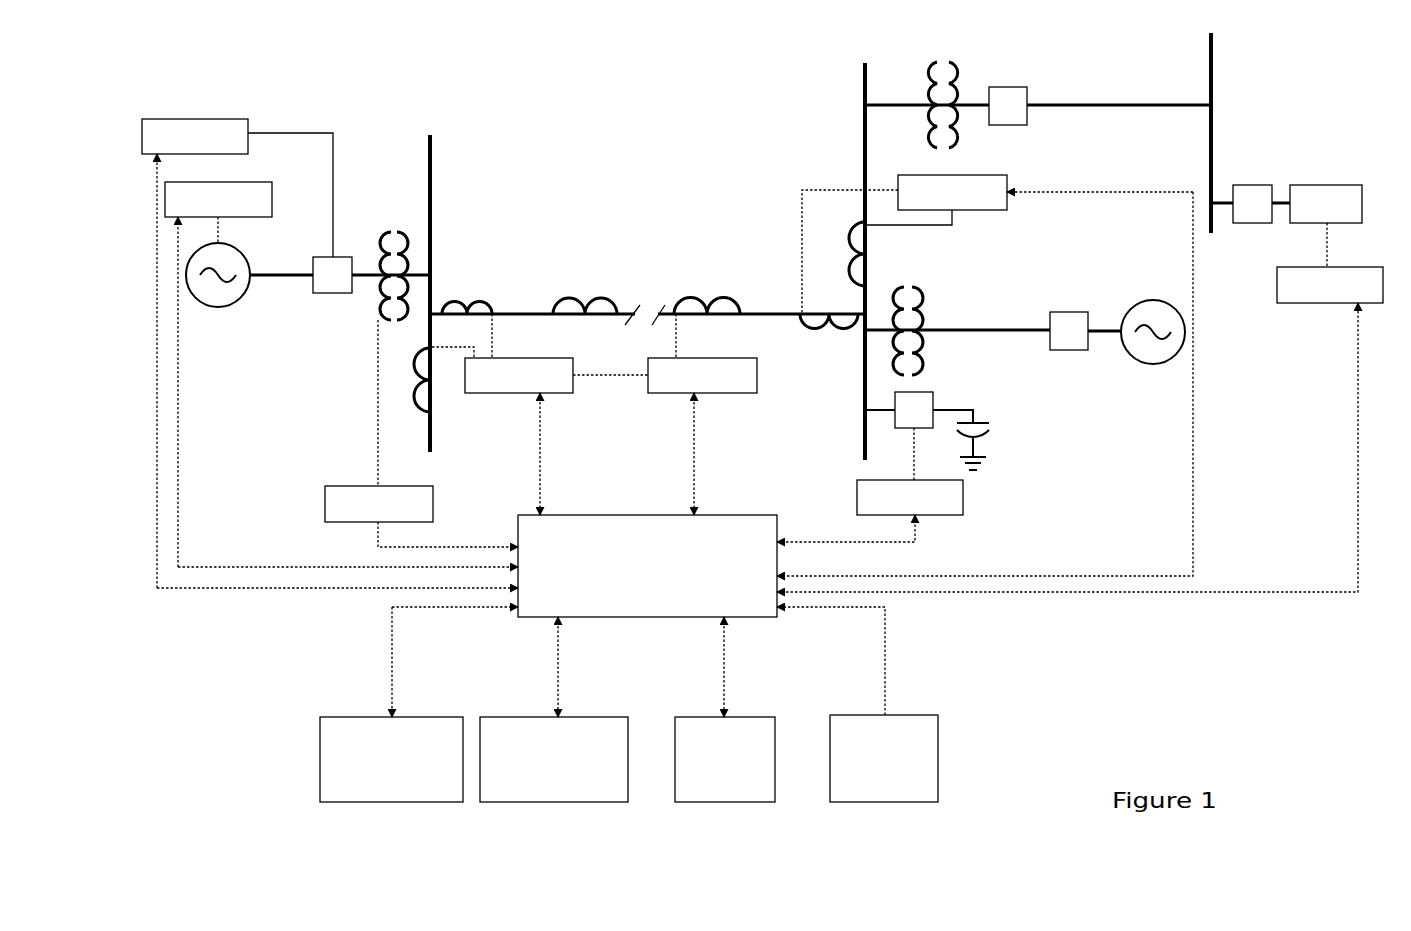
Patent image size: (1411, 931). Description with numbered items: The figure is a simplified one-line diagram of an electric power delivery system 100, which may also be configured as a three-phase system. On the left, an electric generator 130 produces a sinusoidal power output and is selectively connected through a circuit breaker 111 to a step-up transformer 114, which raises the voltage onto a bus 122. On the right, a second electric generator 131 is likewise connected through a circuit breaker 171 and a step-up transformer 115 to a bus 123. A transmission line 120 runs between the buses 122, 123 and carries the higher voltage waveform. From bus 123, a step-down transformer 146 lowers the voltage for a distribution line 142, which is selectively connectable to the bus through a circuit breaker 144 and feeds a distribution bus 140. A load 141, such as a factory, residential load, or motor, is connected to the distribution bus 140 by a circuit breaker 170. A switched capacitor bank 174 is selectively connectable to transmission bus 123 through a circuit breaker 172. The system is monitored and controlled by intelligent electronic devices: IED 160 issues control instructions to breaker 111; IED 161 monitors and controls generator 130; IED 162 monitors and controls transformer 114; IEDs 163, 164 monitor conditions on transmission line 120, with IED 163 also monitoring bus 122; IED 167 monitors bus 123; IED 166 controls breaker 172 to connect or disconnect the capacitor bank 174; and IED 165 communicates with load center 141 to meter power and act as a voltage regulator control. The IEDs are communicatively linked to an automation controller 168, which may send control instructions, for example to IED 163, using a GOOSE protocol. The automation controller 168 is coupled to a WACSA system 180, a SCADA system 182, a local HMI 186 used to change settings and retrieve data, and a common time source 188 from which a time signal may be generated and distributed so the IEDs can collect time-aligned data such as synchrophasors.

The electric power delivery system 100 is at (628, 116).
The circuit breaker 111 is at (330, 295).
The step-up transformer 114 is at (408, 230).
The step-up transformer 115 is at (924, 290).
The transmission line 120 is at (515, 307).
The bus 122 is at (433, 168).
The bus 123 is at (862, 392).
The electric generator 130 is at (243, 247).
The electric generator 131 is at (1153, 364).
The distribution bus 140 is at (1214, 117).
The load 141 is at (1328, 185).
The distribution line 142 is at (1103, 102).
The circuit breaker 144 is at (1003, 85).
The step-down transformer 146 is at (938, 62).
The IED 160 is at (228, 95).
The IED 161 is at (249, 182).
The IED 162 is at (350, 486).
The IED 163 is at (518, 396).
The IED 164 is at (683, 395).
The IED 165 is at (1283, 304).
The IED 166 is at (856, 487).
The IED 167 is at (952, 173).
The automation controller 168 is at (647, 566).
The circuit breaker 170 is at (1254, 183).
The circuit breaker 171 is at (1062, 312).
The circuit breaker 172 is at (927, 390).
The switched capacitor bank 174 is at (977, 421).
The WACSA system 180 is at (414, 803).
The SCADA system 182 is at (531, 803).
The local HMI 186 is at (764, 803).
The common time source 188 is at (883, 803).